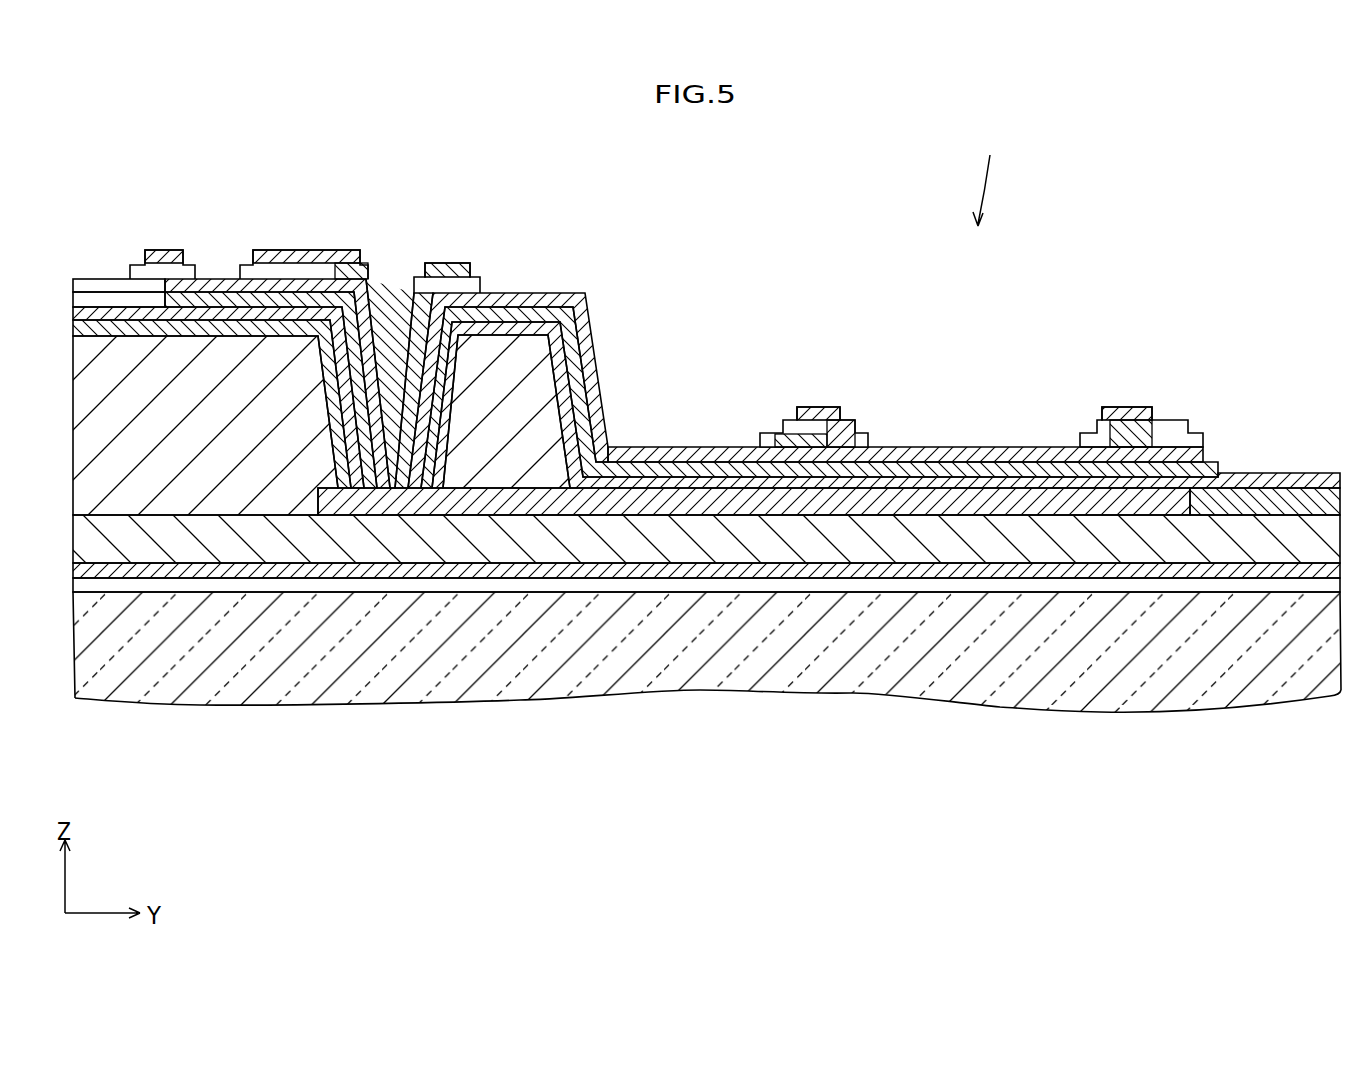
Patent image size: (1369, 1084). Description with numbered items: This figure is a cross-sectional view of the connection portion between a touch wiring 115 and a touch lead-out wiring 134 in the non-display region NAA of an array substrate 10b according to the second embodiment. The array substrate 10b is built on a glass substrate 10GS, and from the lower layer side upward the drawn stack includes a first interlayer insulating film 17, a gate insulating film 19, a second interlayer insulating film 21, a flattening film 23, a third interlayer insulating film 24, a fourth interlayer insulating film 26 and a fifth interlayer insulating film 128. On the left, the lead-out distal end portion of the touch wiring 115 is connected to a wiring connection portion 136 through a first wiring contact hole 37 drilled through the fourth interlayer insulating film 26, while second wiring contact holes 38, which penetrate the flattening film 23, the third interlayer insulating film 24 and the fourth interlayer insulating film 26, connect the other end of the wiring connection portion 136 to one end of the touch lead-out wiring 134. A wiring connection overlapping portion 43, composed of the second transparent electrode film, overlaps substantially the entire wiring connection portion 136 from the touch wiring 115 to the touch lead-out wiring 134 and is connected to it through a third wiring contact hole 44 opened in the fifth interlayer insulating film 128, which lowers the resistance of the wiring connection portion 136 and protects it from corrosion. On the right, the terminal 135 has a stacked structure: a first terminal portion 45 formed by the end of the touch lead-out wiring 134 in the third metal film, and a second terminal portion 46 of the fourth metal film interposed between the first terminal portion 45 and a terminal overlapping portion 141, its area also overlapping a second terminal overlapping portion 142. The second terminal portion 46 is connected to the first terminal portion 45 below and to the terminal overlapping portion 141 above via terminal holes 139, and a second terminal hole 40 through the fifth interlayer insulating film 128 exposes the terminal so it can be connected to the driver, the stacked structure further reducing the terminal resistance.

The glass substrate 10GS is at (1243, 693).
The array substrate 10b is at (1135, 697).
The first interlayer insulating film 17 is at (400, 585).
The gate insulating film 19 is at (320, 570).
The second interlayer insulating film 21 is at (243, 540).
The flattening film 23 is at (177, 490).
The third interlayer insulating film 24 is at (374, 308).
The fourth interlayer insulating film 26 is at (124, 300).
The first wiring contact hole 37 is at (195, 292).
The second wiring contact holes 38 is at (441, 395).
The second terminal hole 40 is at (830, 407).
The wiring connection overlapping portion 43 is at (303, 250).
The third wiring contact hole 44 is at (178, 250).
The first terminal portion 45 is at (1025, 505).
The second terminal portion 46 is at (974, 490).
The touch wiring 115 is at (101, 292).
The fifth interlayer insulating film 128 is at (275, 249).
The touch lead-out wiring 134 is at (589, 500).
The terminal 135 is at (886, 586).
The wiring connection portion 136 is at (320, 266).
The terminal holes 139 is at (587, 397).
The terminal overlapping portion 141 is at (971, 470).
The second terminal overlapping portion 142 is at (908, 447).
The non-display region NAA is at (994, 175).